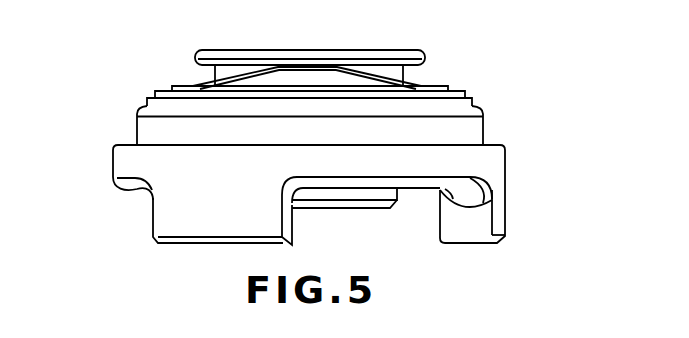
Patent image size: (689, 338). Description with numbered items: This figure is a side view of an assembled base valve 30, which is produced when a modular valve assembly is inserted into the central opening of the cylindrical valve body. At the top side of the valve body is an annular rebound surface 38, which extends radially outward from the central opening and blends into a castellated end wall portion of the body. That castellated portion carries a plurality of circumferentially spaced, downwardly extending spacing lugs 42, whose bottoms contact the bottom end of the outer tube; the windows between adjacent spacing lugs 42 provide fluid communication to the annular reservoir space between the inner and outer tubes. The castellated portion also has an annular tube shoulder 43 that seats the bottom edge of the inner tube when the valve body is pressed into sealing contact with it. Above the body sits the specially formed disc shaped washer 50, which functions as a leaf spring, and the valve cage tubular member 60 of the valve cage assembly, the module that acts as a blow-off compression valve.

The base valve 30 is at (511, 128).
The rebound surface 38 is at (468, 92).
The spacing lugs 42 is at (152, 231).
The tube shoulder 43 is at (132, 146).
The disc shaped washer 50 is at (418, 82).
The valve cage tubular member 60 is at (382, 50).